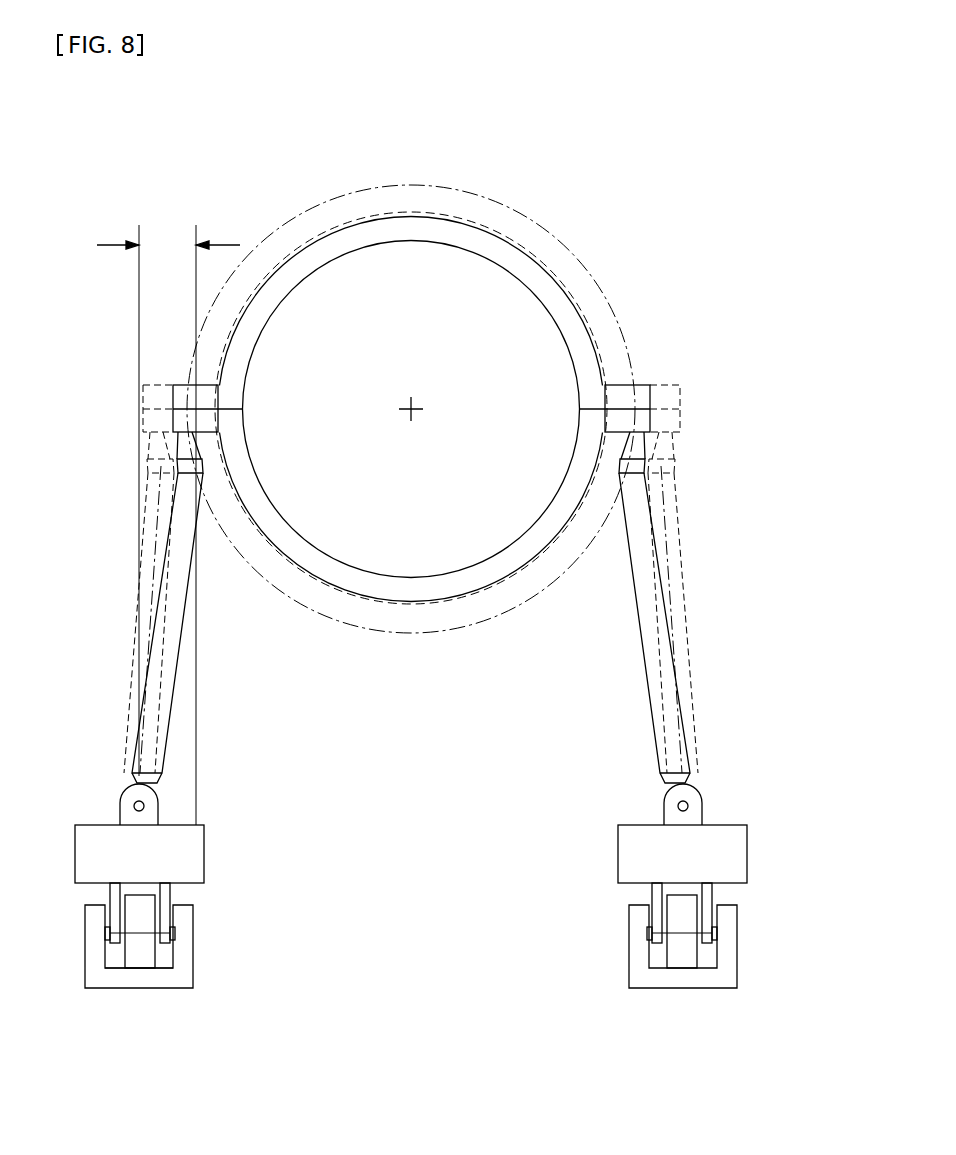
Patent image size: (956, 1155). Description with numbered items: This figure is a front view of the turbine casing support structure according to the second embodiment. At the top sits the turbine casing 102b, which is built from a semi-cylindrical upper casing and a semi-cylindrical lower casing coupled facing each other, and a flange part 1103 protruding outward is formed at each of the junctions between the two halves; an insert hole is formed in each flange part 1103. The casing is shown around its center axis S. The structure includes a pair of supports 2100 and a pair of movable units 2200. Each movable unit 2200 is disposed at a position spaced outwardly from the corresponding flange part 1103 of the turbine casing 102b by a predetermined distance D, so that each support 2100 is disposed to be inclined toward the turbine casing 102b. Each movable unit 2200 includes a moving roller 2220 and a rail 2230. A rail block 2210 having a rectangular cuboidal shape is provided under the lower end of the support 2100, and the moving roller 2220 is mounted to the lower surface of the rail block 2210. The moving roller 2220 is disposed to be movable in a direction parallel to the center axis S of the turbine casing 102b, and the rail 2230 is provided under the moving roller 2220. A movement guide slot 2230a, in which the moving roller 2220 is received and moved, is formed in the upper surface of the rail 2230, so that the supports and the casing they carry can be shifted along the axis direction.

The turbine casing 102b is at (470, 232).
The center axis S is at (413, 408).
The predetermined distance D is at (168, 523).
The flange part 1103 is at (637, 397).
The support 2100 is at (153, 618).
The movable unit 2200 is at (411, 935).
The rail block 2210 is at (193, 862).
The moving roller 2220 is at (145, 925).
The rail 2230 is at (183, 960).
The movement guide slot 2230a is at (116, 956).